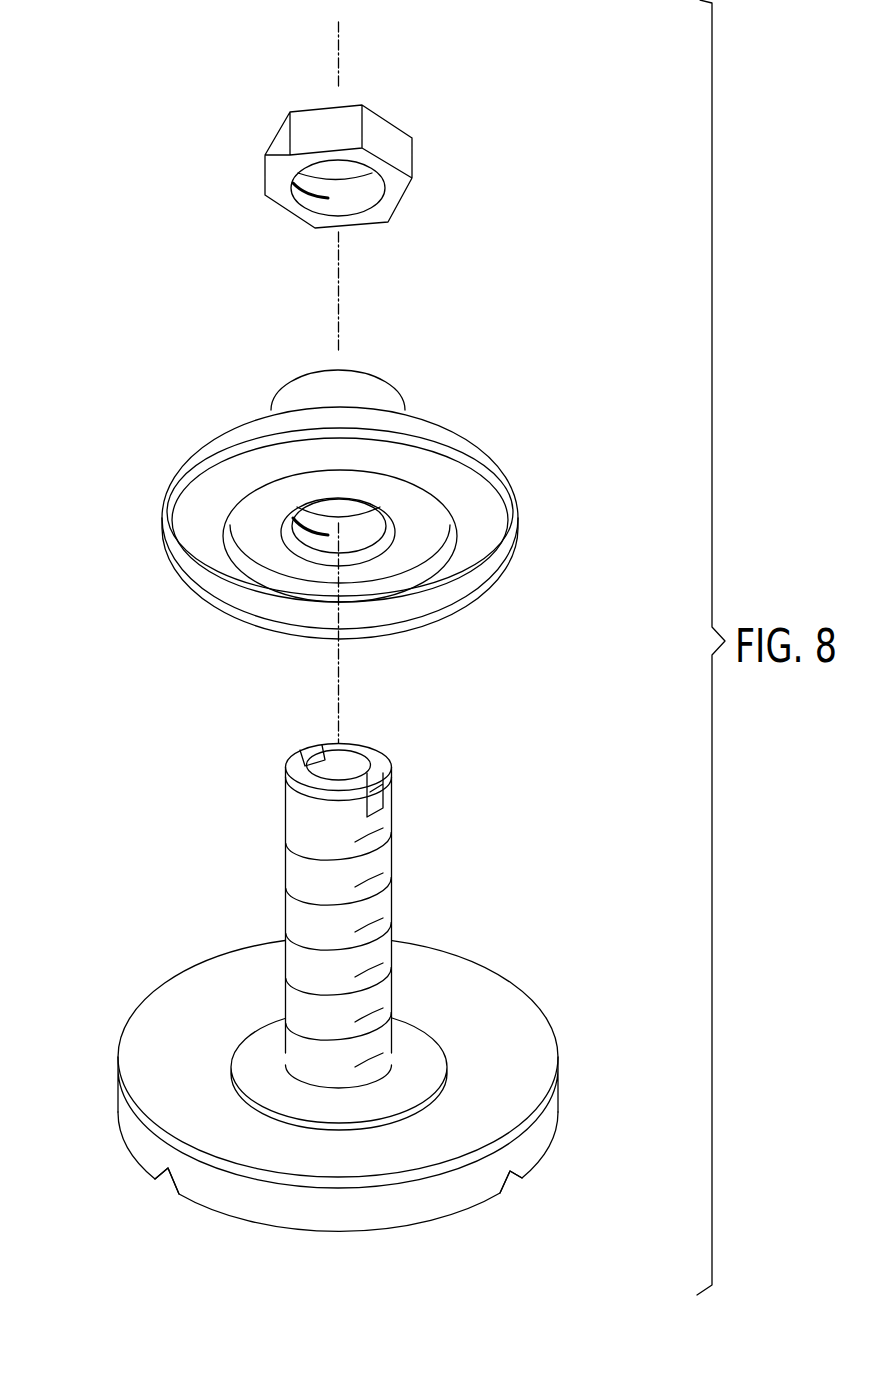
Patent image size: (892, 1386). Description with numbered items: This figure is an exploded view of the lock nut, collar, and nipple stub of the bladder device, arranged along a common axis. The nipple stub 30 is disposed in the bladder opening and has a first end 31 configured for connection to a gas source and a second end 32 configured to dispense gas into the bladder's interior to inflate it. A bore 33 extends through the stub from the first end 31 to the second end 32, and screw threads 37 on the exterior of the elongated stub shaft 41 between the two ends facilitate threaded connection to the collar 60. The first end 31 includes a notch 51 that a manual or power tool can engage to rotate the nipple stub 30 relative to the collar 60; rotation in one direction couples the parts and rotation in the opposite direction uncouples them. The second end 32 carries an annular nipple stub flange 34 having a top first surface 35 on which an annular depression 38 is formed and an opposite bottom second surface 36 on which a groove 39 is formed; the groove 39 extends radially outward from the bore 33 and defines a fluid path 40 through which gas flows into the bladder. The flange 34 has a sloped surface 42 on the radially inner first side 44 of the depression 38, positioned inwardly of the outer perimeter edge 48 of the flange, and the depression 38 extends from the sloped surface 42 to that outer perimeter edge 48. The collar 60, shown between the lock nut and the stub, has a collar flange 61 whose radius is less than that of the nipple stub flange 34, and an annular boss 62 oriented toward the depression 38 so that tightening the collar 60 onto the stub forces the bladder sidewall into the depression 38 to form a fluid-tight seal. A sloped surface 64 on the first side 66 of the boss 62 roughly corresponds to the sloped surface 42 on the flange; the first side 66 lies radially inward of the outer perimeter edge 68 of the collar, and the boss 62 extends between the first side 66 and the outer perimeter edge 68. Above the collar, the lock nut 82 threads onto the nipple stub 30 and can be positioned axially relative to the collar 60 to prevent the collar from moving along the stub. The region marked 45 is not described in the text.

The lock nut 82 is at (343, 202).
The collar 60 is at (373, 389).
The collar flange 61 is at (480, 458).
The boss 62 is at (220, 492).
The sloped surface 64 is at (287, 597).
The first side 66 is at (220, 557).
The outer perimeter edge 68 is at (465, 607).
The nipple stub 30 is at (310, 893).
The first end 31 is at (307, 803).
The bore 33 is at (345, 765).
The notch 51 is at (383, 798).
The elongated stub shaft 41 is at (383, 853).
The screw threads 37 is at (386, 930).
The nipple stub flange 34 is at (475, 983).
The second end 32 is at (137, 1136).
The second surface 36 is at (399, 1234).
The sloped surface 42 is at (440, 1083).
The groove 39 is at (515, 1178).
The fluid path 40 is at (512, 1188).
The first side 44 is at (240, 1027).
The outer region 45 is at (175, 1042).
The depression 38 is at (515, 1023).
The outer perimeter edge 48 is at (555, 1038).
The first surface 35 is at (415, 1147).